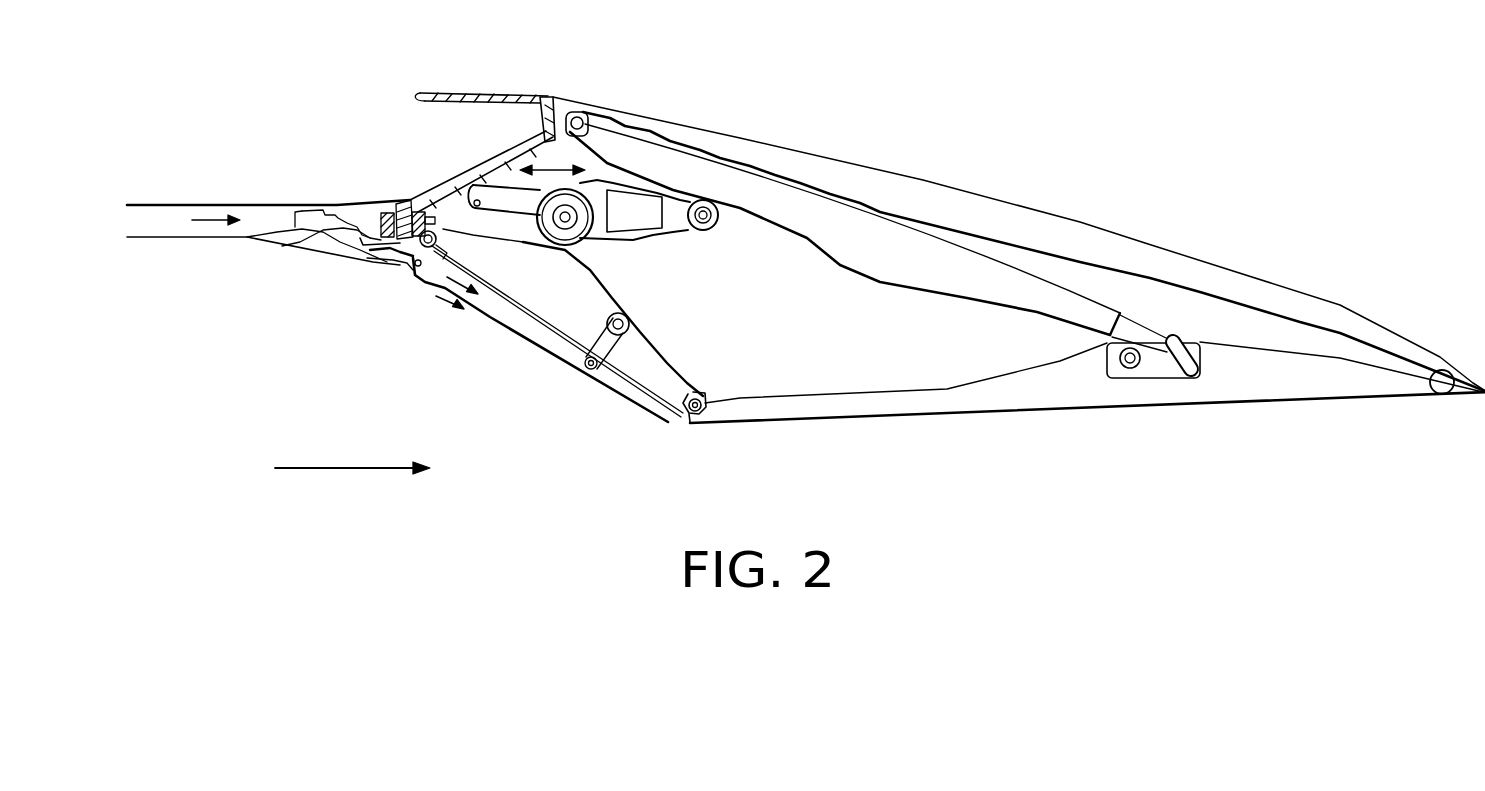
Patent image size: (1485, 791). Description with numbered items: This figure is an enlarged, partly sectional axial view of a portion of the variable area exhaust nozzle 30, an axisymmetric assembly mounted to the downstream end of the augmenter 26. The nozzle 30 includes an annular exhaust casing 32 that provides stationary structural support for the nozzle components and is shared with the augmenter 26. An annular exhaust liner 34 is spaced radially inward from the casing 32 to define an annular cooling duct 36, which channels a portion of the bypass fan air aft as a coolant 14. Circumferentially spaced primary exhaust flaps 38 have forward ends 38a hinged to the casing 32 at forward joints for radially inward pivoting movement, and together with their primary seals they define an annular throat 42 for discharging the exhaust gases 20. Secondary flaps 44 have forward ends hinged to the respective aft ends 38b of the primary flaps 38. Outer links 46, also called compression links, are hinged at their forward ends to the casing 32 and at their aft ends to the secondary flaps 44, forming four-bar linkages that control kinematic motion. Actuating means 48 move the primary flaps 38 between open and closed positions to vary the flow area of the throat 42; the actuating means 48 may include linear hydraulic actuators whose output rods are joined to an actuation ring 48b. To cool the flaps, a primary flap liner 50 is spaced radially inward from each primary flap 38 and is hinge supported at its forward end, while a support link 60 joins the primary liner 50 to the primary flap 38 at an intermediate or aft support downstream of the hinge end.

The coolant 14 is at (205, 220).
The exhaust gases 20 is at (320, 468).
The augmenter 26 is at (185, 178).
The variable area exhaust nozzle 30 is at (958, 133).
The exhaust casing 32 is at (425, 200).
The exhaust liner 34 is at (197, 237).
The cooling duct 36 is at (153, 223).
The primary exhaust flap 38 is at (650, 337).
The forward end of primary flap 38a is at (440, 233).
The aft end of primary flap 38b is at (697, 388).
The annular throat 42 is at (690, 420).
The secondary flap 44 is at (928, 417).
The outer link 46 is at (965, 302).
The actuating means 48 is at (598, 176).
The actuation ring 48b is at (648, 235).
The primary flap liner 50 is at (543, 343).
The support link 60 is at (610, 322).